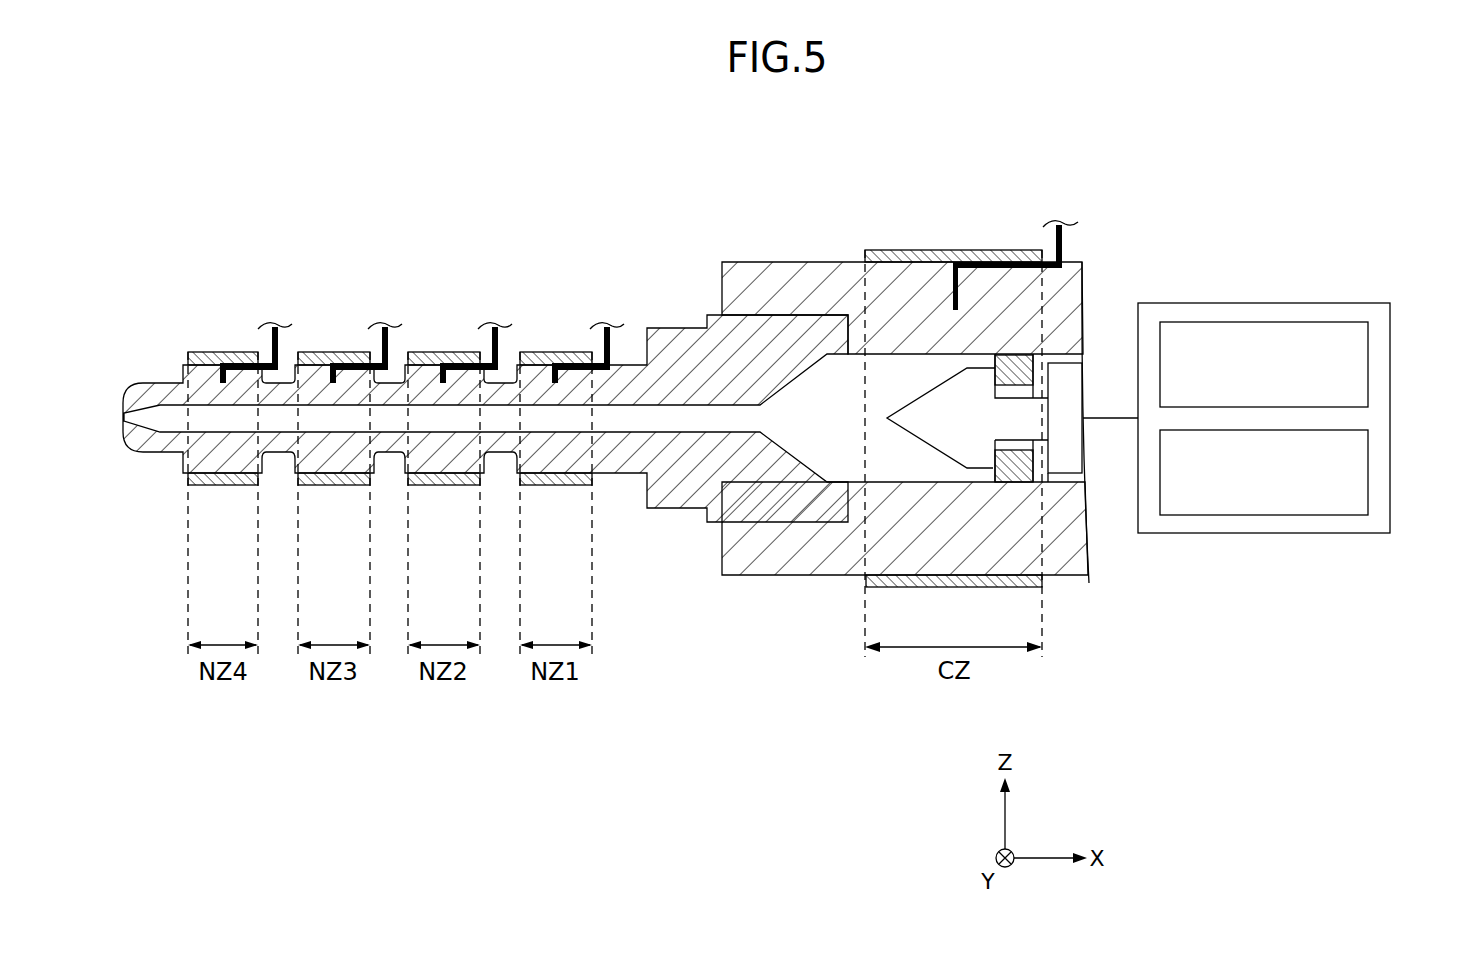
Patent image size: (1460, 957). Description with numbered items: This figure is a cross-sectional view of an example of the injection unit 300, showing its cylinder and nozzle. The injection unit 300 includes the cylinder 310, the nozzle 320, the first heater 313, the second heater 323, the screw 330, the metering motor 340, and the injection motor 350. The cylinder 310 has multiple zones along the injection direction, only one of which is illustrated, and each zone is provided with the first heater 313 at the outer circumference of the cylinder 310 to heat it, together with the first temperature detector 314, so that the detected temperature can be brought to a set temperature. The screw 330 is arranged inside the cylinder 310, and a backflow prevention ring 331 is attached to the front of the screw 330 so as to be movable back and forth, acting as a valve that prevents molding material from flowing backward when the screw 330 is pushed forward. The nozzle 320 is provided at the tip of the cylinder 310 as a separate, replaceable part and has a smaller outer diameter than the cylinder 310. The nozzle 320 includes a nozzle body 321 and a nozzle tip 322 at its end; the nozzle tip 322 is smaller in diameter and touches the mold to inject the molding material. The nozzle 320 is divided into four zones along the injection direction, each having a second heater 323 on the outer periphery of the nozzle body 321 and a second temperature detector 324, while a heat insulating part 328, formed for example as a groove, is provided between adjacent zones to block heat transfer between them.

The injection unit 300 is at (83, 158).
The cylinder 310 is at (792, 272).
The first heater 313 is at (952, 585).
The first temperature detector 314 is at (952, 292).
The nozzle 320 is at (682, 328).
The nozzle body 321 is at (190, 463).
The nozzle tip 322 is at (150, 453).
The second heater 323 is at (222, 478).
The second temperature detector 324 is at (221, 368).
The heat insulating part 328 is at (268, 455).
The screw 330 is at (1068, 395).
The backflow prevention ring 331 is at (1015, 473).
The metering motor 340 is at (1390, 474).
The injection motor 350 is at (1390, 366).